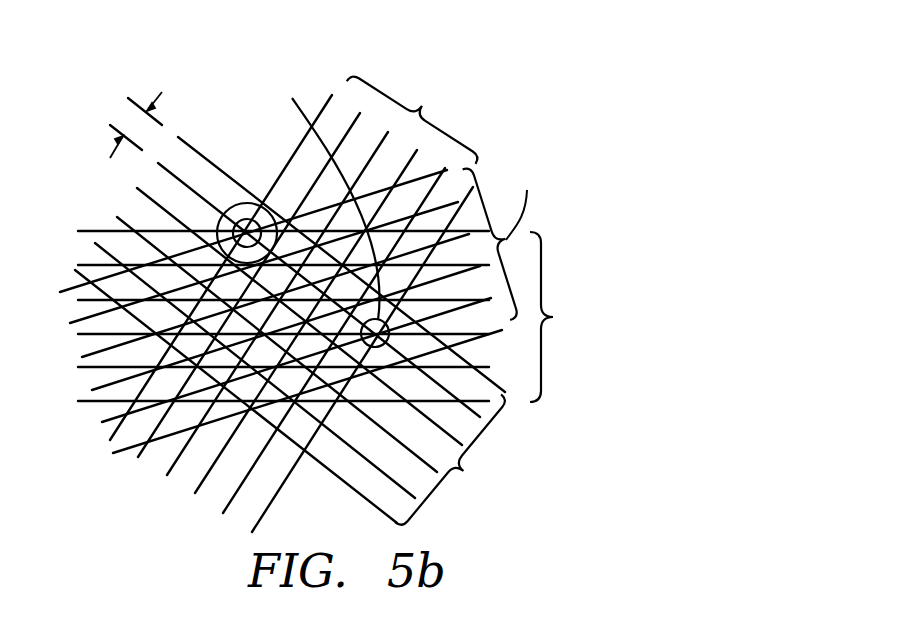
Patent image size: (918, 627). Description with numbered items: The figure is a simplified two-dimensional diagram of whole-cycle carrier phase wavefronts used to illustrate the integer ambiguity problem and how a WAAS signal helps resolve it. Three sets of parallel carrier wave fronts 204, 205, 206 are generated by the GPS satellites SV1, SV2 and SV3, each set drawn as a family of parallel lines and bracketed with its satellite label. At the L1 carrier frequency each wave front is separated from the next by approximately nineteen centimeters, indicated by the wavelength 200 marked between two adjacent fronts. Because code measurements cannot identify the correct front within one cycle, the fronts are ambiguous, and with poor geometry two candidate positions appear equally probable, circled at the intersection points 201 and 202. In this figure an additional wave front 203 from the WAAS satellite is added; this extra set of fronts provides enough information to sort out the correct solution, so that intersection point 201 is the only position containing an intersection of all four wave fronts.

The wavelength 200 is at (124, 116).
The intersection point 201 is at (258, 198).
The intersection point 202 is at (325, 206).
The wave front 203 is at (522, 83).
The carrier wave front 204 is at (622, 178).
The carrier wave front 205 is at (657, 305).
The carrier wave front 206 is at (570, 483).